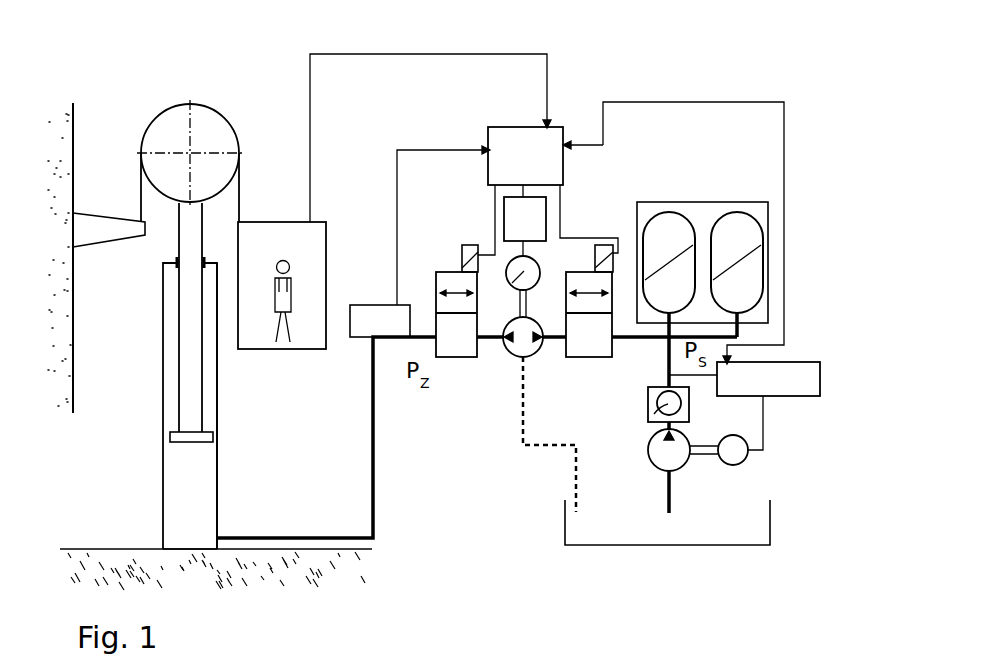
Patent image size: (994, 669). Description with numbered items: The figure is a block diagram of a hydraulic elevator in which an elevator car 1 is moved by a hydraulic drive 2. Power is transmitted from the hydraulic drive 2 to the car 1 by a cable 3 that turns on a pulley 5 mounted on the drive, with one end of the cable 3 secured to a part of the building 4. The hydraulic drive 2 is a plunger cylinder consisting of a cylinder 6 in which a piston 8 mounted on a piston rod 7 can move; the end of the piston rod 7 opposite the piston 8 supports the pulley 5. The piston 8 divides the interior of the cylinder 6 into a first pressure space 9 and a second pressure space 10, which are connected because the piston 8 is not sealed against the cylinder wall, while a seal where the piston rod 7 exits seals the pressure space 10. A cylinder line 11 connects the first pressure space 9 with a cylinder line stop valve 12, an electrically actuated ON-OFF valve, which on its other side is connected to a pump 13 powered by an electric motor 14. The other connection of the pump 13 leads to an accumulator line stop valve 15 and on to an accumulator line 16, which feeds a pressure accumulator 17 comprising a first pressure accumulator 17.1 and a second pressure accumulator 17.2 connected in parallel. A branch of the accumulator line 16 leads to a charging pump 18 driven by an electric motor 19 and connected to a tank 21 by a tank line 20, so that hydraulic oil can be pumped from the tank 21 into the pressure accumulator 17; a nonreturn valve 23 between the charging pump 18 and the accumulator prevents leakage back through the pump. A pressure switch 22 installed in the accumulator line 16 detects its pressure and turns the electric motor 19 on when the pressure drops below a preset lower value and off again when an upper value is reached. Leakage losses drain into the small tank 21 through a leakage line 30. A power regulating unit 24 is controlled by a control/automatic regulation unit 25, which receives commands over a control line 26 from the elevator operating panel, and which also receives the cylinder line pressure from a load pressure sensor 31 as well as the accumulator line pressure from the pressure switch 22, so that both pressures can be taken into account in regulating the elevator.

The elevator car 1 is at (312, 254).
The hydraulic drive 2 is at (145, 296).
The cable 3 is at (242, 185).
The building 4 is at (67, 118).
The pulley 5 is at (197, 149).
The cylinder 6 is at (162, 393).
The piston rod 7 is at (188, 332).
The piston 8 is at (193, 455).
The first pressure space 9 is at (197, 484).
The second pressure space 10 is at (204, 391).
The cylinder line 11 is at (375, 424).
The cylinder line stop valve 12 is at (458, 320).
The pump 13 is at (498, 357).
The electric motor 14 is at (514, 284).
The accumulator line stop valve 15 is at (622, 321).
The accumulator line 16 is at (632, 344).
The pressure accumulator 17 is at (700, 237).
The first pressure accumulator 17.1 is at (672, 236).
The second pressure accumulator 17.2 is at (749, 236).
The charging pump 18 is at (654, 454).
The electric motor 19 is at (745, 455).
The tank line 20 is at (666, 494).
The tank 21 is at (606, 542).
The pressure switch 22 is at (818, 362).
The nonreturn valve 23 is at (647, 413).
The power regulating unit 24 is at (504, 228).
The control/automatic regulation unit 25 is at (513, 127).
The control line 26 is at (460, 54).
The leakage line 30 is at (522, 429).
The load pressure sensor 31 is at (374, 305).